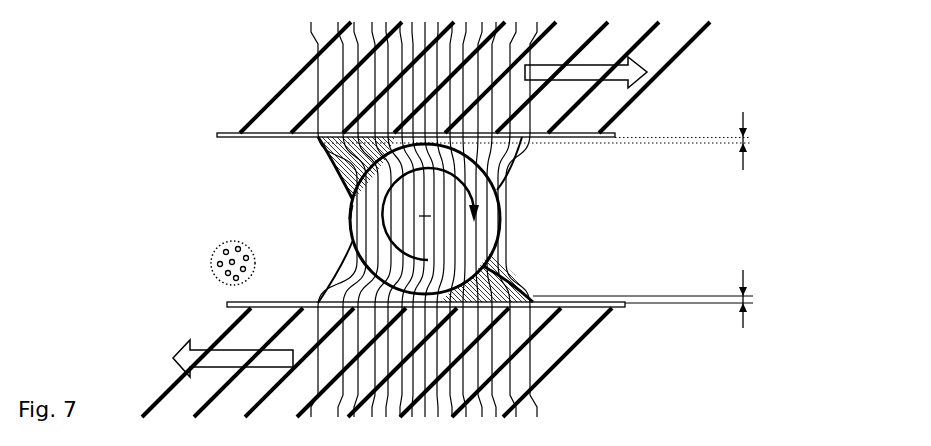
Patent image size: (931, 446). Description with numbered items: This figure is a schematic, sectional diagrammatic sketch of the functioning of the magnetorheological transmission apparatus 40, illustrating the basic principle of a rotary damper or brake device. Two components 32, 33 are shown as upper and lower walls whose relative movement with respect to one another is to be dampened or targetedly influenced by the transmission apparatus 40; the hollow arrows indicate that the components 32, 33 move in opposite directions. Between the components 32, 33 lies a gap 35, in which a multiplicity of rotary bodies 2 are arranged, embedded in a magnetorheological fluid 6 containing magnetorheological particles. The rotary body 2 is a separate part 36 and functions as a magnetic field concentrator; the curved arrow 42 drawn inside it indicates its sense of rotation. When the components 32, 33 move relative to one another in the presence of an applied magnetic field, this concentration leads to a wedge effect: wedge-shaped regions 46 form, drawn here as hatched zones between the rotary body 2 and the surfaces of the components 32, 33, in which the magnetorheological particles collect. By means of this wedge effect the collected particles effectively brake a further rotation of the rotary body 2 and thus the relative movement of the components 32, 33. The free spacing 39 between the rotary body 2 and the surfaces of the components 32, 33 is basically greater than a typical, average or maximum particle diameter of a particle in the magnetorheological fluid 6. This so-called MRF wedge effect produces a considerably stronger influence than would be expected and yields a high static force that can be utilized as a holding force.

The magnetorheological transmission apparatus 40 is at (179, 84).
The component 33 is at (687, 33).
The component 32 is at (575, 345).
The free spacing 39 is at (763, 138).
The separate part 36 is at (500, 210).
The rotation direction of vortex 42 is at (425, 216).
The gap 35 is at (224, 181).
The wedge-shaped region 46 is at (337, 163).
The rotary body 2 is at (353, 226).
The magnetorheological fluid 6 is at (212, 263).